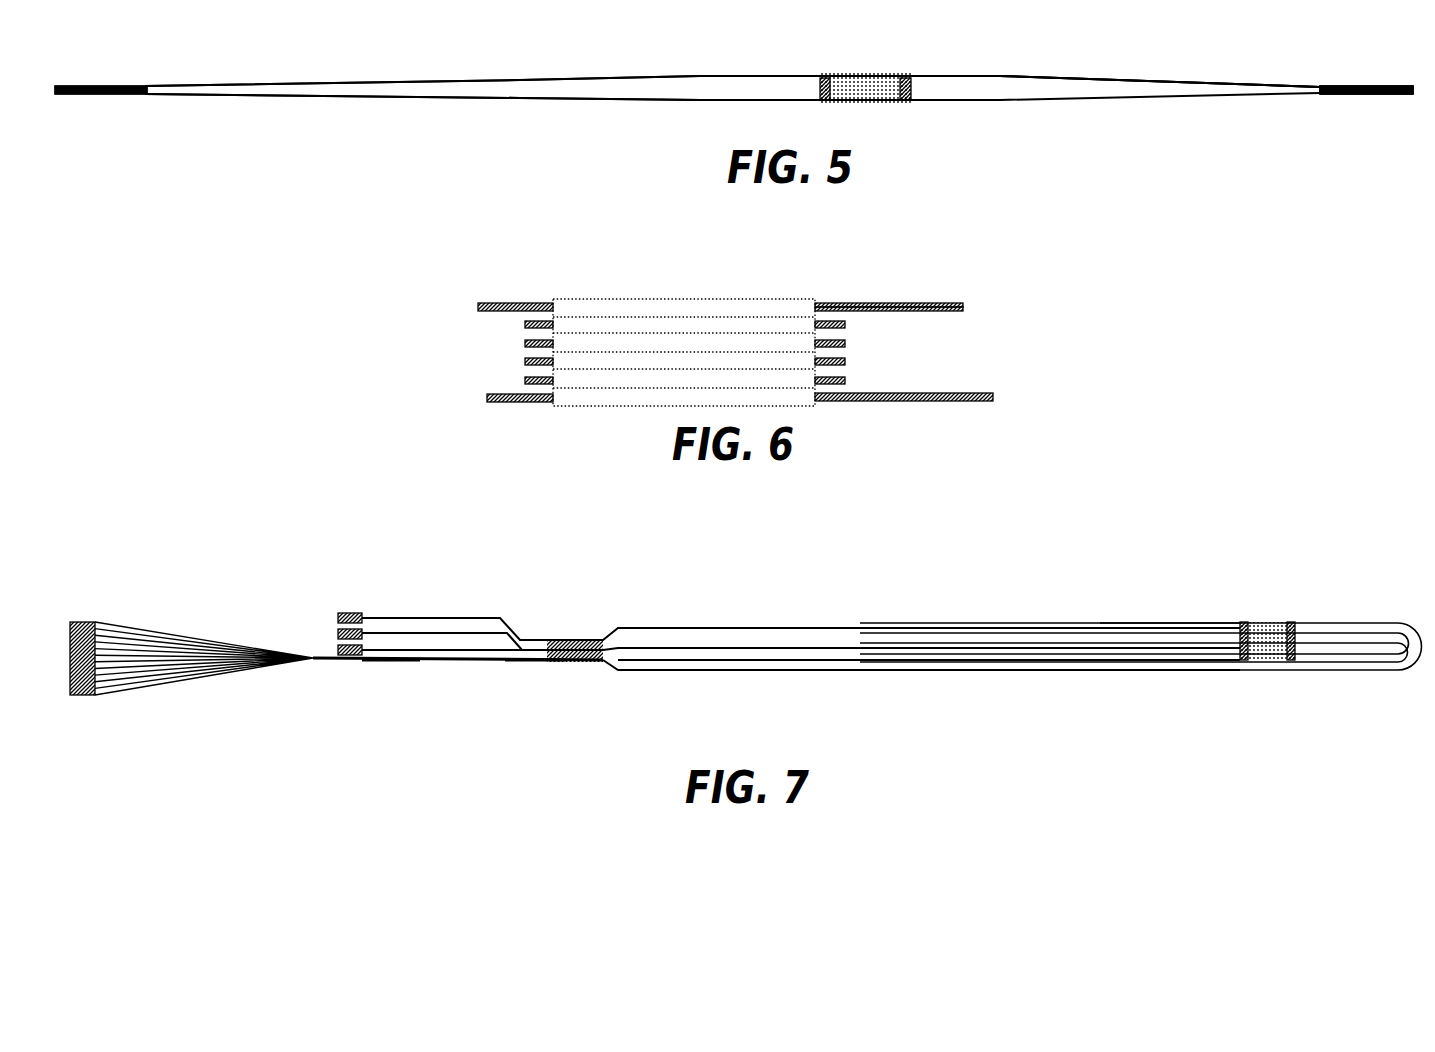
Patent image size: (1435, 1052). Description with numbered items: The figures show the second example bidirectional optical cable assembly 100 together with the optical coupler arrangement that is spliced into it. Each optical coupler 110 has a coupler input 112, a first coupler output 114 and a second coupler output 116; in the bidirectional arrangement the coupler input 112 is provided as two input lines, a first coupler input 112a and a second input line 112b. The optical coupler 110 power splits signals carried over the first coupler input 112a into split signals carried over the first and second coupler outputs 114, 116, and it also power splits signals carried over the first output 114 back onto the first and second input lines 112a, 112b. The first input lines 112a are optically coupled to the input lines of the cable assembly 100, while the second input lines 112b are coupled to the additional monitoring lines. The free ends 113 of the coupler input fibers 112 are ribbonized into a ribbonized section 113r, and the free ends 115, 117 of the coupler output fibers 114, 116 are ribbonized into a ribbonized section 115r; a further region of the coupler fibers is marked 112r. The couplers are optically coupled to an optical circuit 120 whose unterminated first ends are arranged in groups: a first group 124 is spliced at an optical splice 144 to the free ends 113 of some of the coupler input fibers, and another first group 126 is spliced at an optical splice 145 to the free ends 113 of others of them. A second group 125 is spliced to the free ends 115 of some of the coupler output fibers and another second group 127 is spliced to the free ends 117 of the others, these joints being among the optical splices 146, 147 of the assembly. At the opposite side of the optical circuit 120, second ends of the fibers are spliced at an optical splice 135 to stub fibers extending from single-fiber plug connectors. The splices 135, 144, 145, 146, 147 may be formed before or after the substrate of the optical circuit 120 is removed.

In FIG. 7, the optical cable assembly 100 is at (1181, 694).
In FIG. 5, the optical coupler 110 is at (862, 102).
In FIG. 7, the optical coupler 110 is at (1253, 621).
In FIG. 5, the coupler input 112 is at (708, 102).
In FIG. 5, the first coupler input 112a is at (636, 78).
In FIG. 7, the first coupler input 112a is at (1208, 622).
In FIG. 5, the second input line 112b is at (762, 78).
In FIG. 7, the sheath reference portion 112r is at (870, 628).
In FIG. 5, the free ends of coupler input fibers 113 is at (55, 88).
In FIG. 5, the ribbonized section 113r is at (108, 94).
In FIG. 5, the first coupler output 114 is at (1020, 77).
In FIG. 6, the first coupler output 114 is at (940, 303).
In FIG. 7, the first coupler output 114 is at (1405, 630).
In FIG. 5, the free ends of coupler output fibers 115 is at (1412, 88).
In FIG. 5, the free ends of coupler output fibers 117 is at (1373, 65).
In FIG. 5, the ribbonized section 115r is at (1372, 94).
In FIG. 5, the second coupler output 116 is at (940, 78).
In FIG. 6, the second coupler output 116 is at (950, 311).
In FIG. 7, the optical circuit 120 is at (535, 662).
In FIG. 7, the first group of unterminated first ends 124 is at (772, 628).
In FIG. 7, the second group of unterminated first ends 125 is at (772, 660).
In FIG. 7, the another first group of unterminated first ends 126 is at (773, 642).
In FIG. 7, the another second group of unterminated first ends 127 is at (775, 672).
In FIG. 7, the optical splice 135 is at (392, 661).
In FIG. 7, the optical splice 144 is at (790, 627).
In FIG. 7, the optical splice 145 is at (800, 648).
In FIG. 7, the optical splice 146 is at (800, 665).
In FIG. 7, the optical splice 147 is at (788, 672).